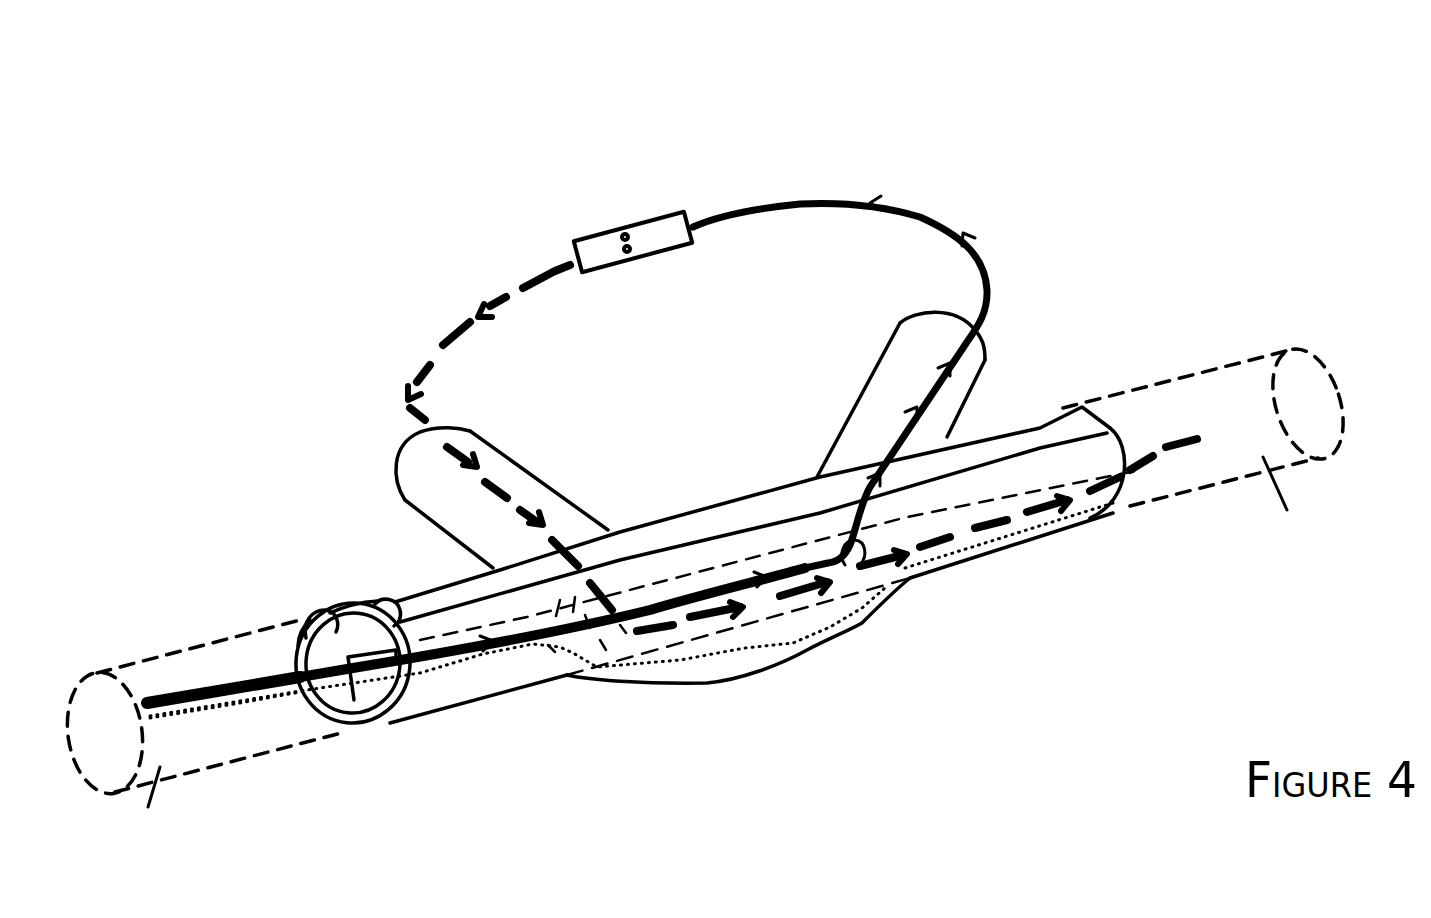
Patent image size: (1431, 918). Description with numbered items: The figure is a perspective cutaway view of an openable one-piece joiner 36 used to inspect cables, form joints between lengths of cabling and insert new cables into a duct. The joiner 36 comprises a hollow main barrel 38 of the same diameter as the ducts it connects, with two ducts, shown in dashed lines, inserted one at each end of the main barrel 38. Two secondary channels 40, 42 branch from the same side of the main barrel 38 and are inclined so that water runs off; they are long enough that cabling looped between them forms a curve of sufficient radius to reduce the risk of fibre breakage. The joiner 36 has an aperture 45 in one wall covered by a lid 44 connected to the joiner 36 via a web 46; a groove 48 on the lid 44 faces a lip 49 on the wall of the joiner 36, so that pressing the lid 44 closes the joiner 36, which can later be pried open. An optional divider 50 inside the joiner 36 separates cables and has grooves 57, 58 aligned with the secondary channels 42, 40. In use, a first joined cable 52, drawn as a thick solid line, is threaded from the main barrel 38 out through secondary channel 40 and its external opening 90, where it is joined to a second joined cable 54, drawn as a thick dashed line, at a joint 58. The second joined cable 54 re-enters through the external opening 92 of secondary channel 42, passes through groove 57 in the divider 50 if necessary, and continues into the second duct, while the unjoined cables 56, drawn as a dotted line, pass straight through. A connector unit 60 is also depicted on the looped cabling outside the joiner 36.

The openable joiner 36 is at (1047, 427).
The hollow main barrel 38 is at (638, 609).
The secondary channel 40 is at (901, 386).
The secondary channel 42 is at (471, 498).
The lid 44 is at (299, 607).
The aperture 45 is at (351, 583).
The web 46 is at (293, 633).
The groove 48 is at (395, 586).
The lip 49 is at (440, 698).
The divider 50 is at (353, 696).
The first joined cable 52 is at (202, 738).
The second joined cable 54 is at (1180, 430).
The unjoined cables 56 is at (225, 770).
The groove 57 is at (626, 640).
The joint 58 is at (889, 611).
The connector unit 60 is at (633, 199).
The external opening 90 is at (596, 449).
The external opening 92 is at (802, 448).